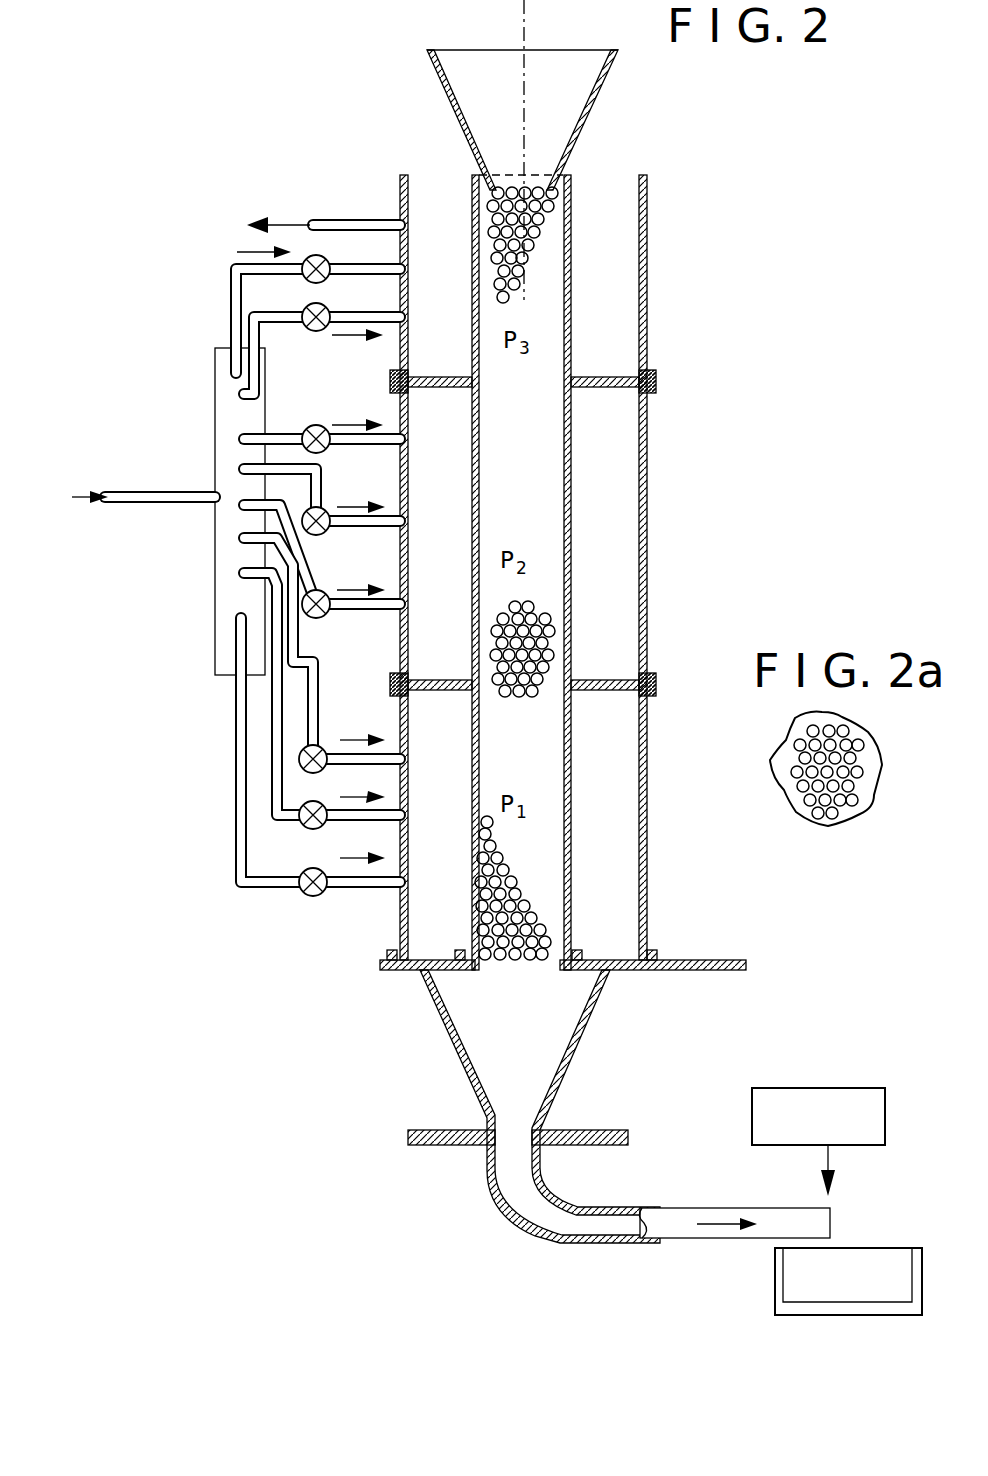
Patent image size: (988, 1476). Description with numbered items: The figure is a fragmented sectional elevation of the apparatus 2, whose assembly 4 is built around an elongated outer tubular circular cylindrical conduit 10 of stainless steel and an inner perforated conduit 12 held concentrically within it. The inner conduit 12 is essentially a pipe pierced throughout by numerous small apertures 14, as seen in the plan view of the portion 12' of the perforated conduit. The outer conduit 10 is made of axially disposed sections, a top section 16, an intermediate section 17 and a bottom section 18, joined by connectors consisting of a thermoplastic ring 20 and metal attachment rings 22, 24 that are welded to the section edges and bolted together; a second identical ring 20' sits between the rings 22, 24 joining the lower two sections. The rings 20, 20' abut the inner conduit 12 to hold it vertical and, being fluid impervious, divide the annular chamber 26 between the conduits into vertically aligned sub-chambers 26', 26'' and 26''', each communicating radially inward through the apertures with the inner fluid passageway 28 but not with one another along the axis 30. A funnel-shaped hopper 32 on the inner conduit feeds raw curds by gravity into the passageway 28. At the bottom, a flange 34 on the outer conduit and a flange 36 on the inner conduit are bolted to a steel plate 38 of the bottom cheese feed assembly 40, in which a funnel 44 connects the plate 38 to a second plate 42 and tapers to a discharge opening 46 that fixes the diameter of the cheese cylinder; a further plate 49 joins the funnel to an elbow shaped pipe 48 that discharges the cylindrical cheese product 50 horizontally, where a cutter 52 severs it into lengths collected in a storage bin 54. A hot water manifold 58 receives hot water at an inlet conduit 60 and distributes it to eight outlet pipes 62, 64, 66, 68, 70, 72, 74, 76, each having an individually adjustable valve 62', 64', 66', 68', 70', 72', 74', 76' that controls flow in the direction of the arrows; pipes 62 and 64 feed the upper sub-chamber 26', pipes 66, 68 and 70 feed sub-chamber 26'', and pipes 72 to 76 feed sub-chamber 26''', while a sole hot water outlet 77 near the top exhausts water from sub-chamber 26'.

In FIG. 2, the apparatus 2 is at (746, 231).
In FIG. 2, the assembly 4 is at (692, 343).
In FIG. 2, the outer tubular circular cylindrical conduit 10 is at (652, 540).
In FIG. 2, the inner perforated tubular circular cylindrical conduit 12 is at (635, 640).
In FIG. 2A, the portion of perforated conduit 12' is at (835, 788).
In FIG. 2A, the apertures 14 is at (843, 738).
In FIG. 2, the top conduit section 16 is at (648, 300).
In FIG. 2, the intermediate conduit section 17 is at (647, 475).
In FIG. 2, the bottom conduit section 18 is at (648, 785).
In FIG. 2, the thermoplastic ring 20 is at (523, 361).
In FIG. 2, the thermoplastic ring 20' is at (523, 705).
In FIG. 2, the metal attachment ring 22 is at (658, 376).
In FIG. 2, the metal attachment ring 24 is at (656, 394).
In FIG. 2, the chamber 26 is at (654, 159).
In FIG. 2, the sub-chamber 26' is at (666, 217).
In FIG. 2, the sub-chamber 26'' is at (670, 594).
In FIG. 2, the sub-chamber 26''' is at (661, 837).
In FIG. 2, the inner fluid passageway 28 is at (537, 480).
In FIG. 2, the axis 30 is at (528, 79).
In FIG. 2, the hopper 32 is at (603, 114).
In FIG. 2, the annular flange 34 is at (652, 954).
In FIG. 2, the flange 36 is at (590, 955).
In FIG. 2, the steel plate 38 is at (750, 967).
In FIG. 2, the bottom cheese feed assembly 40 is at (418, 1042).
In FIG. 2, the second plate 42 is at (588, 1130).
In FIG. 2, the funnel 44 is at (462, 1080).
In FIG. 2, the discharge opening 46 is at (524, 1132).
In FIG. 2, the elbow shaped pipe 48 is at (492, 1200).
In FIG. 2, the plate 49 is at (423, 1145).
In FIG. 2, the cylindrical cheese product 50 is at (728, 1178).
In FIG. 2, the cutter 52 is at (853, 1088).
In FIG. 2, the storage bin 54 is at (775, 1288).
In FIG. 2, the water manifold 58 is at (215, 620).
In FIG. 2, the inlet conduit 60 is at (155, 493).
In FIG. 2, the outlet pipe 62 is at (276, 321).
In FIG. 2, the valve 62' is at (344, 260).
In FIG. 2, the outlet pipe 64 is at (285, 354).
In FIG. 2, the valve 64' is at (343, 308).
In FIG. 2, the outlet pipe 66 is at (322, 410).
In FIG. 2, the valve 66' is at (342, 412).
In FIG. 2, the outlet pipe 68 is at (285, 478).
In FIG. 2, the valve 68' is at (343, 495).
In FIG. 2, the outlet pipe 70 is at (277, 554).
In FIG. 2, the valve 70' is at (343, 581).
In FIG. 2, the outlet pipe 72 is at (275, 648).
In FIG. 2, the valve 72' is at (339, 731).
In FIG. 2, the outlet pipe 74 is at (277, 691).
In FIG. 2, the valve 74' is at (338, 795).
In FIG. 2, the outlet pipe 76 is at (287, 750).
In FIG. 2, the valve 76' is at (328, 904).
In FIG. 2, the hot water outlet 77 is at (376, 213).